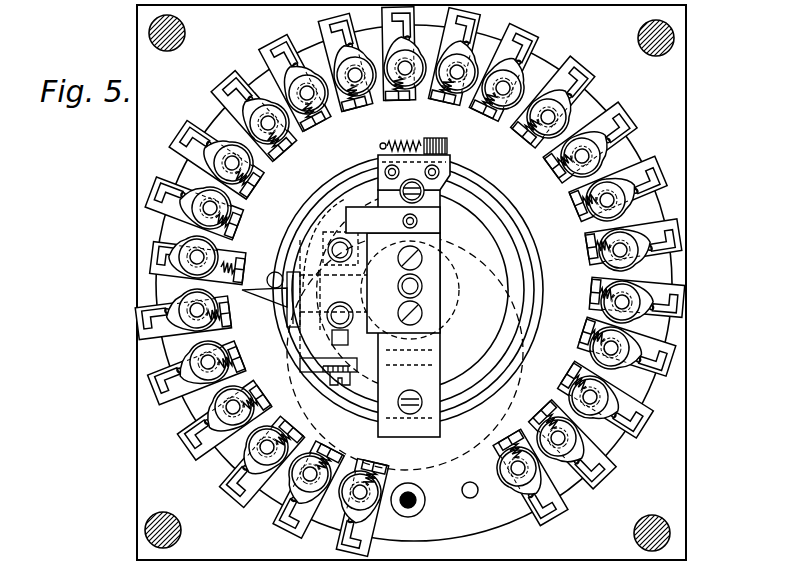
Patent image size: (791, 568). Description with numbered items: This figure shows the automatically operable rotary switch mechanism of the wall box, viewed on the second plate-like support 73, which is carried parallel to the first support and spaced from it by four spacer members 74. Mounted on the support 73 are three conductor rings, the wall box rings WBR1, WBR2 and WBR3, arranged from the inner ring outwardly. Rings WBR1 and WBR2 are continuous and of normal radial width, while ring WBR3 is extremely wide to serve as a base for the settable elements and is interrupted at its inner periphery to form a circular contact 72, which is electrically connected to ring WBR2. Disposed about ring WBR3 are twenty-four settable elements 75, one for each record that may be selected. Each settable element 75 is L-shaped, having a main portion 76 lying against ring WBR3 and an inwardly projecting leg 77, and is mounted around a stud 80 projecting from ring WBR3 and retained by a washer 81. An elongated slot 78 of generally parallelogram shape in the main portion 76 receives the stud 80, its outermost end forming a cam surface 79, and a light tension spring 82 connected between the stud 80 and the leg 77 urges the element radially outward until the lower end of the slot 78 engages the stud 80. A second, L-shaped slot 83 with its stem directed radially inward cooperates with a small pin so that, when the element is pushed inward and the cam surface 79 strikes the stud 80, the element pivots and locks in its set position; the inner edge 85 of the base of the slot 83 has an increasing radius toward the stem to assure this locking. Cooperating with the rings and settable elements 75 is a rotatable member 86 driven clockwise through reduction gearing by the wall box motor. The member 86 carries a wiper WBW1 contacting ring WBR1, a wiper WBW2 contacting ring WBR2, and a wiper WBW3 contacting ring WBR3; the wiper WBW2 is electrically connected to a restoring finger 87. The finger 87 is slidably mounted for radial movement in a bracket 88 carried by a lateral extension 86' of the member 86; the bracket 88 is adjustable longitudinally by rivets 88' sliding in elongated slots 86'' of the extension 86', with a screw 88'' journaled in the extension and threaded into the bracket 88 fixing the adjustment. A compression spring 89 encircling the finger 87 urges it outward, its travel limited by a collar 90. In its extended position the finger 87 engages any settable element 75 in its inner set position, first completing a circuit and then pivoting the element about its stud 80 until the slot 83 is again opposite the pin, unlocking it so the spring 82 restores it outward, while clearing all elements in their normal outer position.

The circular contact 72 is at (275, 272).
The second plate-like support 73 is at (663, 457).
The spacer members 74 is at (654, 533).
The settable element 75 is at (231, 72).
The main portion 76 is at (256, 80).
The leg 77 is at (294, 438).
The elongated slot 78 is at (160, 226).
The cam surface 79 is at (186, 186).
The stud 80 is at (288, 56).
The washer 81 is at (176, 287).
The tension spring 82 is at (233, 245).
The second slot 83 is at (157, 194).
The inner edge 85 is at (174, 221).
The rotatable member 86 is at (408, 278).
The lateral extension 86' is at (324, 223).
The elongated slots 86'' is at (340, 301).
The restoring finger 87 is at (288, 313).
The bracket 88 is at (305, 294).
The rivets 88' is at (365, 343).
The screw 88'' is at (356, 324).
The compression spring 89 is at (305, 350).
The collar 90 is at (291, 270).
The wiper WBW1 is at (350, 206).
The wiper WBW2 is at (410, 414).
The wiper WBW3 is at (433, 151).
The wall box ring WBR1 is at (503, 253).
The wall box ring WBR2 is at (529, 290).
The wall box ring WBR3 is at (366, 518).